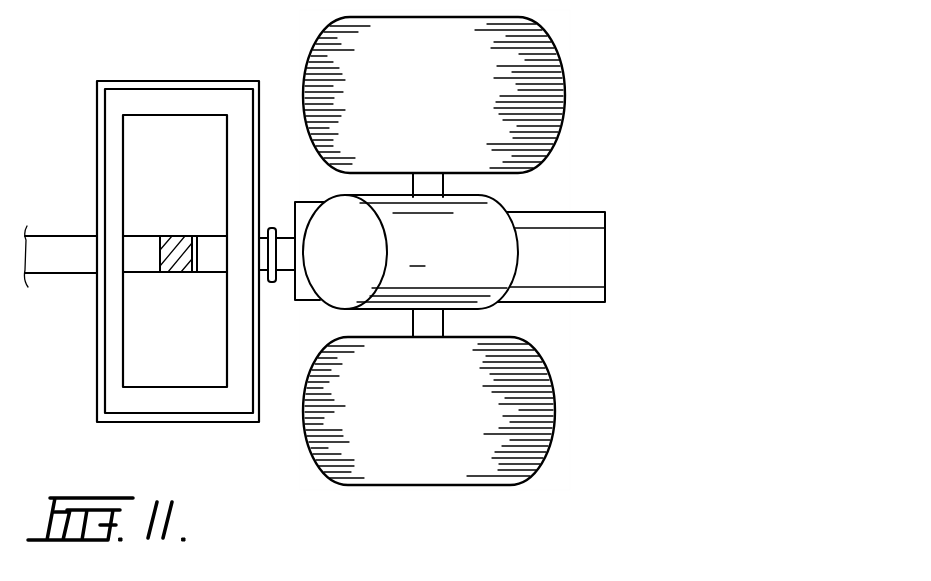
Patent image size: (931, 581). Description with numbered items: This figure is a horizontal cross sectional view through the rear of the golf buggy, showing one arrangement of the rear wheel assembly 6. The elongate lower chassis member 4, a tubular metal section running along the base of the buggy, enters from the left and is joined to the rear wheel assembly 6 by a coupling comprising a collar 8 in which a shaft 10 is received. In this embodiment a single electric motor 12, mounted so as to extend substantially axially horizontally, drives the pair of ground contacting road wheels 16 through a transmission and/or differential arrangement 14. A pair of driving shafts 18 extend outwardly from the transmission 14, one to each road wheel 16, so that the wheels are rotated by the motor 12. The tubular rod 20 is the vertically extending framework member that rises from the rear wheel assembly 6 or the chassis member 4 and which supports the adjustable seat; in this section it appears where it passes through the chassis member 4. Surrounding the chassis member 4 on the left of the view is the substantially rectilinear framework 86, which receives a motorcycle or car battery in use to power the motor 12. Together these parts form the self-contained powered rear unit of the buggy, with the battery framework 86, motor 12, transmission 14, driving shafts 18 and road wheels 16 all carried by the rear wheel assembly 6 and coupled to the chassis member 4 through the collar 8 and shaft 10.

The lower chassis member 4 is at (52, 238).
The rear wheel assembly 6 is at (555, 445).
The collar 8 is at (273, 228).
The shaft 10 is at (281, 286).
The electric motor 12 is at (468, 276).
The transmission and/or differential arrangement 14 is at (567, 275).
The road wheels 16 is at (537, 118).
The driving shafts 18 is at (426, 188).
The tubular rod 20 is at (181, 236).
The battery framework 86 is at (113, 348).